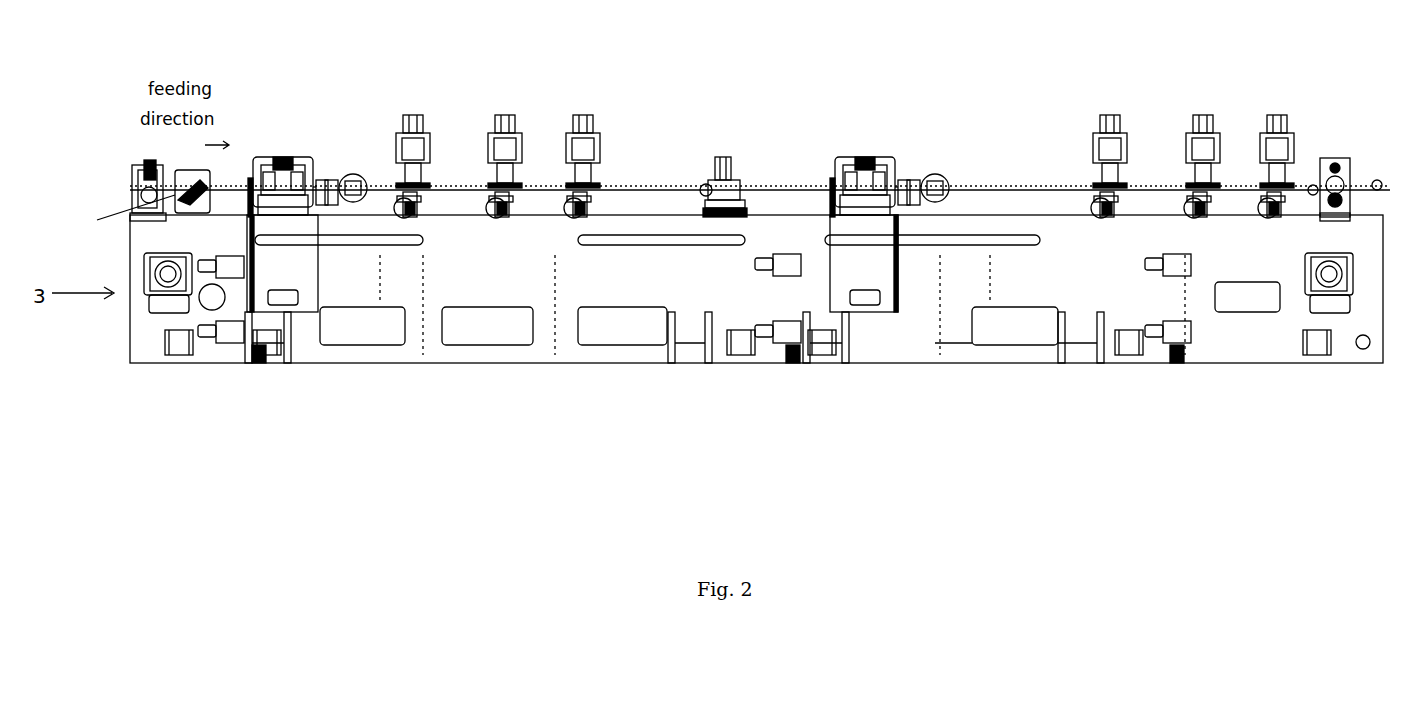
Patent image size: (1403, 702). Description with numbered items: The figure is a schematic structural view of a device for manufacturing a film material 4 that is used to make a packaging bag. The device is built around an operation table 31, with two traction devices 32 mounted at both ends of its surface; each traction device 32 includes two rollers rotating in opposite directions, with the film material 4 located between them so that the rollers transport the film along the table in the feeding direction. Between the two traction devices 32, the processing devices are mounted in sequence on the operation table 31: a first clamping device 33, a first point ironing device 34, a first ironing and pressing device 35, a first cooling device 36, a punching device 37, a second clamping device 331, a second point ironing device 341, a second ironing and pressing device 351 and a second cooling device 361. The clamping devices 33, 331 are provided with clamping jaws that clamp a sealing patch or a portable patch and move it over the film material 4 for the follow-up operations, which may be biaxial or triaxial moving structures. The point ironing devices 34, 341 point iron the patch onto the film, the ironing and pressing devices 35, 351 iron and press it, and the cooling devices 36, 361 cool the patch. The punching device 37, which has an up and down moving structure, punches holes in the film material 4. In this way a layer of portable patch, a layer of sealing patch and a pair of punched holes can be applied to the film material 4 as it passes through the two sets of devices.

The operation table 31 is at (643, 275).
The traction device 32 is at (150, 170).
The first clamping device 33 is at (282, 157).
The second clamping device 331 is at (875, 157).
The first point ironing device 34 is at (413, 115).
The first ironing and pressing device 35 is at (507, 115).
The first cooling device 36 is at (590, 118).
The punching device 37 is at (720, 155).
The second point ironing device 341 is at (1105, 115).
The second ironing and pressing device 351 is at (1200, 115).
The second cooling device 361 is at (1268, 115).
The film material 4 is at (1020, 190).